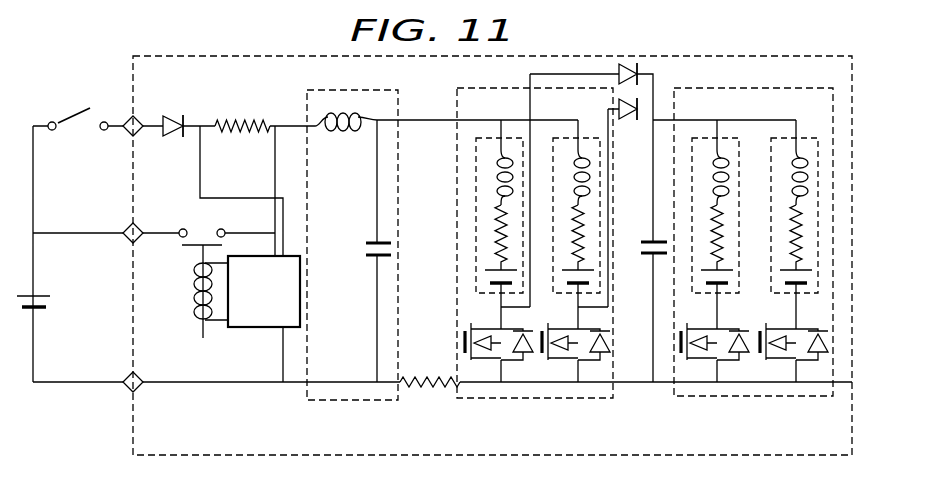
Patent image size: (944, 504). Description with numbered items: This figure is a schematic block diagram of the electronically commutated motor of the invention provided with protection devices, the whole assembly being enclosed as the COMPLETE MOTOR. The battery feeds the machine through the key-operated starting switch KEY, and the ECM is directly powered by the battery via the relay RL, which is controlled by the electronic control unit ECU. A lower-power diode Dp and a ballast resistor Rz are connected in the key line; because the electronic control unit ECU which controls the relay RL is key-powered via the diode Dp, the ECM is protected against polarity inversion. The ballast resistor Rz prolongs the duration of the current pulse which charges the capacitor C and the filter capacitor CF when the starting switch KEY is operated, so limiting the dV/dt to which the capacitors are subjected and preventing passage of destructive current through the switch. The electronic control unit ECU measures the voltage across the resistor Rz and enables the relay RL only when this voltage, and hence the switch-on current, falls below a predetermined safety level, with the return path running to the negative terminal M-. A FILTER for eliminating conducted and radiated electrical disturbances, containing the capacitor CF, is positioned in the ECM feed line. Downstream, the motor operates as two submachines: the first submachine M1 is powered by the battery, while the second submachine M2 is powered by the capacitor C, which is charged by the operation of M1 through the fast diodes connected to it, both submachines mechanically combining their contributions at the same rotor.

The key switch KEY is at (78, 134).
The lower-power diode Dp is at (176, 108).
The ballast resistor Rz is at (242, 106).
The negative motor terminal M- is at (120, 375).
The relay RL is at (197, 291).
The electronic control unit ECU is at (264, 291).
The filter FILTER is at (442, 259).
The filter capacitor CF is at (369, 228).
The capacitor C is at (647, 228).
The first submachine M1 is at (535, 260).
The second submachine M2 is at (753, 260).
The complete motor COMPLETE MOTOR is at (492, 255).